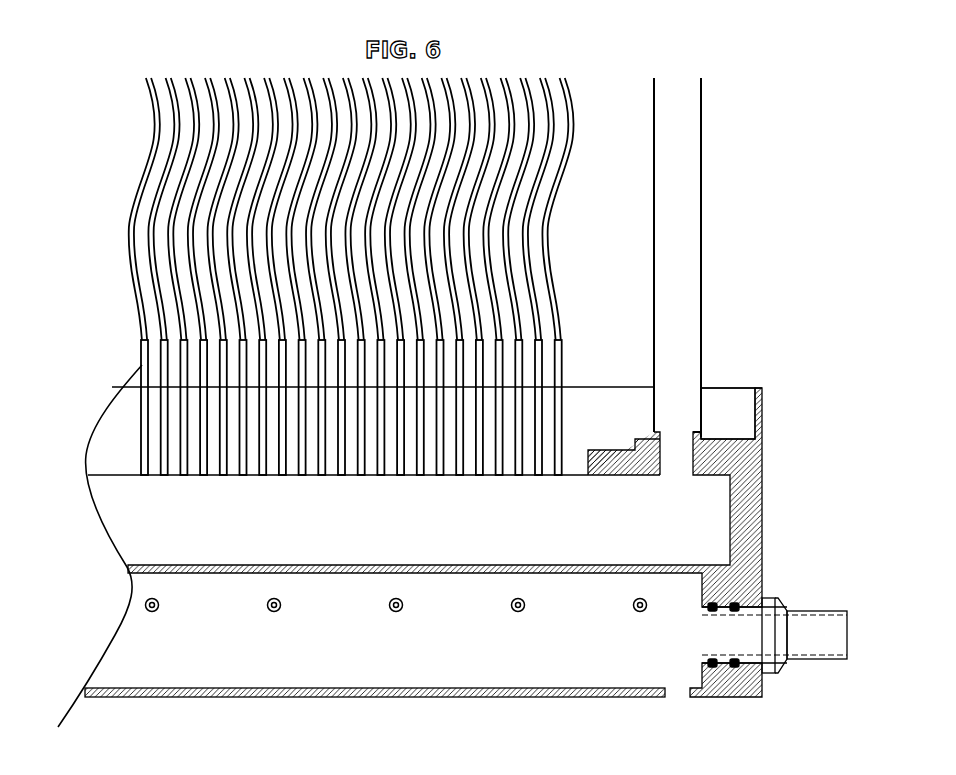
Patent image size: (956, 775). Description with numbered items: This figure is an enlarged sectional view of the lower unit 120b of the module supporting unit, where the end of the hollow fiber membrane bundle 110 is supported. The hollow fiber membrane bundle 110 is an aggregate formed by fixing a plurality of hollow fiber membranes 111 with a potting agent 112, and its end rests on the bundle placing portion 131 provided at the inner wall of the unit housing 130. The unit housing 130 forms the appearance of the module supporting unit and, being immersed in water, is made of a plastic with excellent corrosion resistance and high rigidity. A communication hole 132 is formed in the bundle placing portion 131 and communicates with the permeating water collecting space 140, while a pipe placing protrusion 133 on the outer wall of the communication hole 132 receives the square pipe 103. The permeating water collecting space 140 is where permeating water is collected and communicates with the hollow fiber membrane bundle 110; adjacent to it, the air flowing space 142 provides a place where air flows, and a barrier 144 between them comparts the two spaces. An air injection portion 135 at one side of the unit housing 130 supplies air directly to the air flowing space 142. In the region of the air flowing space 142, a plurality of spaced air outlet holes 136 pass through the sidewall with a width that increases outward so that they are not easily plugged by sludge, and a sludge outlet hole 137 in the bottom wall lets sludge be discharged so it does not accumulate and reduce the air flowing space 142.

The square pipe 103 is at (704, 222).
The hollow fiber membrane bundle 110 is at (65, 313).
The hollow fiber membranes 111 is at (142, 316).
The potting agent 112 is at (135, 399).
The lower unit 120b is at (765, 411).
The unit housing 130 is at (755, 503).
The bundle placing portion 131 is at (712, 458).
The communication hole 132 is at (681, 461).
The pipe placing protrusion 133 is at (697, 433).
The air injection portion 135 is at (820, 648).
The air outlet holes 136 is at (274, 612).
The sludge outlet hole 137 is at (685, 692).
The permeating water collecting space 140 is at (703, 533).
The air flowing space 142 is at (592, 645).
The barrier 144 is at (472, 565).